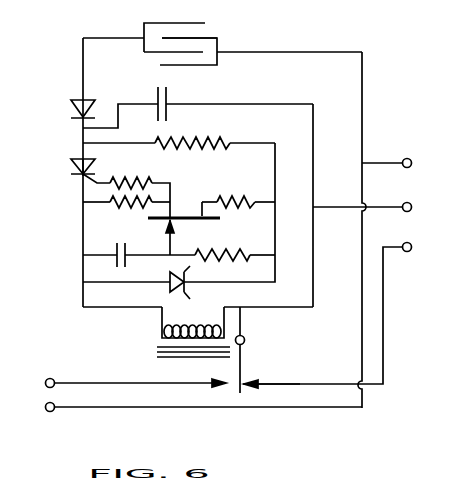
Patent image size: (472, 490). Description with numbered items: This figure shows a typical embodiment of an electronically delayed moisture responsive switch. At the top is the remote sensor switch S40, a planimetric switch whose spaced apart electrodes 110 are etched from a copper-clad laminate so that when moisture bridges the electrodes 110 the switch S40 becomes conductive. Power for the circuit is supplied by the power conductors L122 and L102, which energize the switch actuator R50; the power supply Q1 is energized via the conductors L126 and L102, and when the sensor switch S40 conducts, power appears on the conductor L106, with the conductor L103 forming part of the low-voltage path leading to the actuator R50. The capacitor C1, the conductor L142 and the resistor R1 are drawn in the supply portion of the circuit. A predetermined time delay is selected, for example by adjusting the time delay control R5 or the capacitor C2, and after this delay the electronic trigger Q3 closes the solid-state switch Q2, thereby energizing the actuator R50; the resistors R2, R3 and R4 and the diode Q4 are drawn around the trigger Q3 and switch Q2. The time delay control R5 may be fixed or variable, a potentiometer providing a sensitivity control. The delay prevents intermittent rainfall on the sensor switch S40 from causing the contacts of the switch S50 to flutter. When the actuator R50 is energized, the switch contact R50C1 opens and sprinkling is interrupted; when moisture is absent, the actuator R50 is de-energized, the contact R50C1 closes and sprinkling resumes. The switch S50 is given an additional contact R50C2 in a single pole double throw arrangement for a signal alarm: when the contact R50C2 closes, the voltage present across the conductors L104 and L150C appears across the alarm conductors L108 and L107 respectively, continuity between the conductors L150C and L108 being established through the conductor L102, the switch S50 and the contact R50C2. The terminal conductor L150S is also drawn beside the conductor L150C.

The remote sensor switch S40 is at (166, 24).
The electrodes 110 is at (193, 37).
The conductor L126 is at (83, 62).
The conductor L106 is at (83, 130).
The conductor L103 is at (83, 225).
The power conductor L122 is at (362, 64).
The power supply Q1 is at (86, 103).
The capacitor C1 is at (167, 100).
The conductor L142 is at (300, 104).
The resistor R1 is at (178, 140).
The power conductor L102 is at (275, 163).
The solid-state switch Q2 is at (74, 165).
The resistor R2 is at (114, 180).
The resistor R3 is at (136, 206).
The electronic trigger Q3 is at (200, 216).
The resistor R4 is at (220, 199).
The capacitor C2 is at (126, 252).
The time delay control resistor R5 is at (232, 254).
The diode Q4 is at (170, 282).
The switch actuator R50 is at (193, 332).
The switch S50 is at (241, 364).
The conductor L108 is at (110, 383).
The conductor L107 is at (105, 407).
The switch contact R50C2 is at (168, 391).
The switch contact R50C1 is at (272, 391).
The conductor L104 is at (290, 407).
The conductor L150C is at (383, 208).
The conductor L150S is at (428, 248).